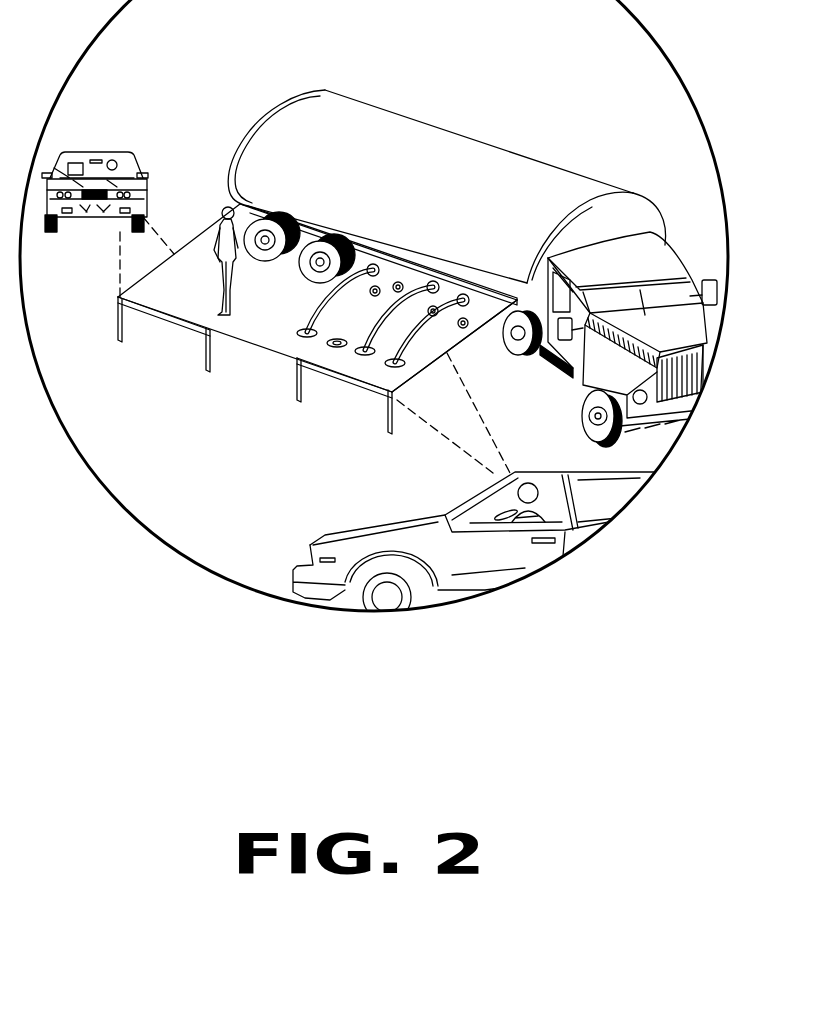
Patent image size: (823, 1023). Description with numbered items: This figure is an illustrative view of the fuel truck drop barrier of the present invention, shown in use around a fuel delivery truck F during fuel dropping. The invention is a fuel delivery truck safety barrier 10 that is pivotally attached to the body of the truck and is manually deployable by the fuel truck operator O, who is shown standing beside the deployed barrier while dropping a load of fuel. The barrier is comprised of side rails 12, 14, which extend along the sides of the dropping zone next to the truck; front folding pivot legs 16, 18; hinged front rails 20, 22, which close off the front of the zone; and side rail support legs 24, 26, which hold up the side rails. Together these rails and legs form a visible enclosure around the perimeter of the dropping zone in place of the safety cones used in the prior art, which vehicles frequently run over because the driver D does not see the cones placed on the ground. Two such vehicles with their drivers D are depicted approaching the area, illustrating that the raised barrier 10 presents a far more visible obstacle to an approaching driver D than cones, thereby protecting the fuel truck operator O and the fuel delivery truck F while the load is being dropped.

The fuel delivery truck safety barrier 10 is at (208, 447).
The side rail 12 is at (205, 260).
The side rail 14 is at (478, 350).
The front folding pivot leg 16 is at (206, 372).
The front folding pivot leg 18 is at (297, 400).
The hinged front rail 20 is at (168, 326).
The hinged front rail 22 is at (348, 380).
The side rail support leg 24 is at (118, 340).
The side rail support leg 26 is at (390, 434).
The driver D is at (110, 128).
The fuel delivery truck F is at (470, 148).
The fuel truck operator O is at (245, 305).